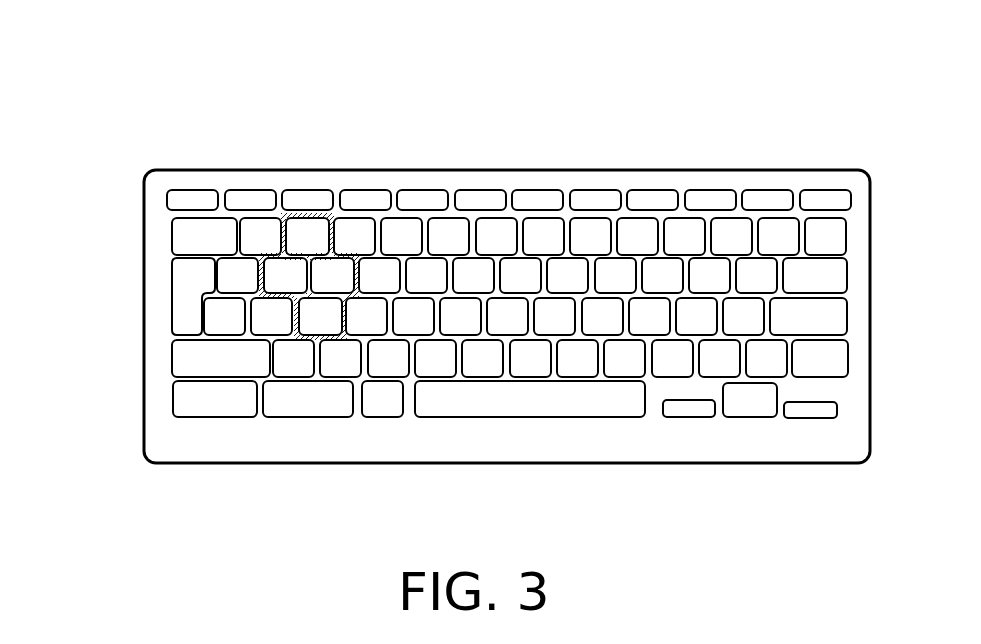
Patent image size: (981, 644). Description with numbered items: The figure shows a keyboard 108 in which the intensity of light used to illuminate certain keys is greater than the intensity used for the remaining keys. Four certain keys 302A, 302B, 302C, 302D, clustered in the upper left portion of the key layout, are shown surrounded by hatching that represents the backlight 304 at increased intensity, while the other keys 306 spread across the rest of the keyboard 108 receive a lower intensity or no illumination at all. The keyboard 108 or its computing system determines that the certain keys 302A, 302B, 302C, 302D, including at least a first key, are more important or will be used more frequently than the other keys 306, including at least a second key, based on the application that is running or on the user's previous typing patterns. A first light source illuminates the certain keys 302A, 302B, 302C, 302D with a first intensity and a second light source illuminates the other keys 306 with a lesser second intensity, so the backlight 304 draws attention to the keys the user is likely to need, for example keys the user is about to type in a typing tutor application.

The keyboard 108 is at (152, 106).
The other keys 306 is at (519, 183).
The backlight 304 is at (345, 498).
The certain key 302A is at (303, 230).
The certain key 302B is at (280, 268).
The certain key 302C is at (343, 268).
The certain key 302D is at (318, 322).